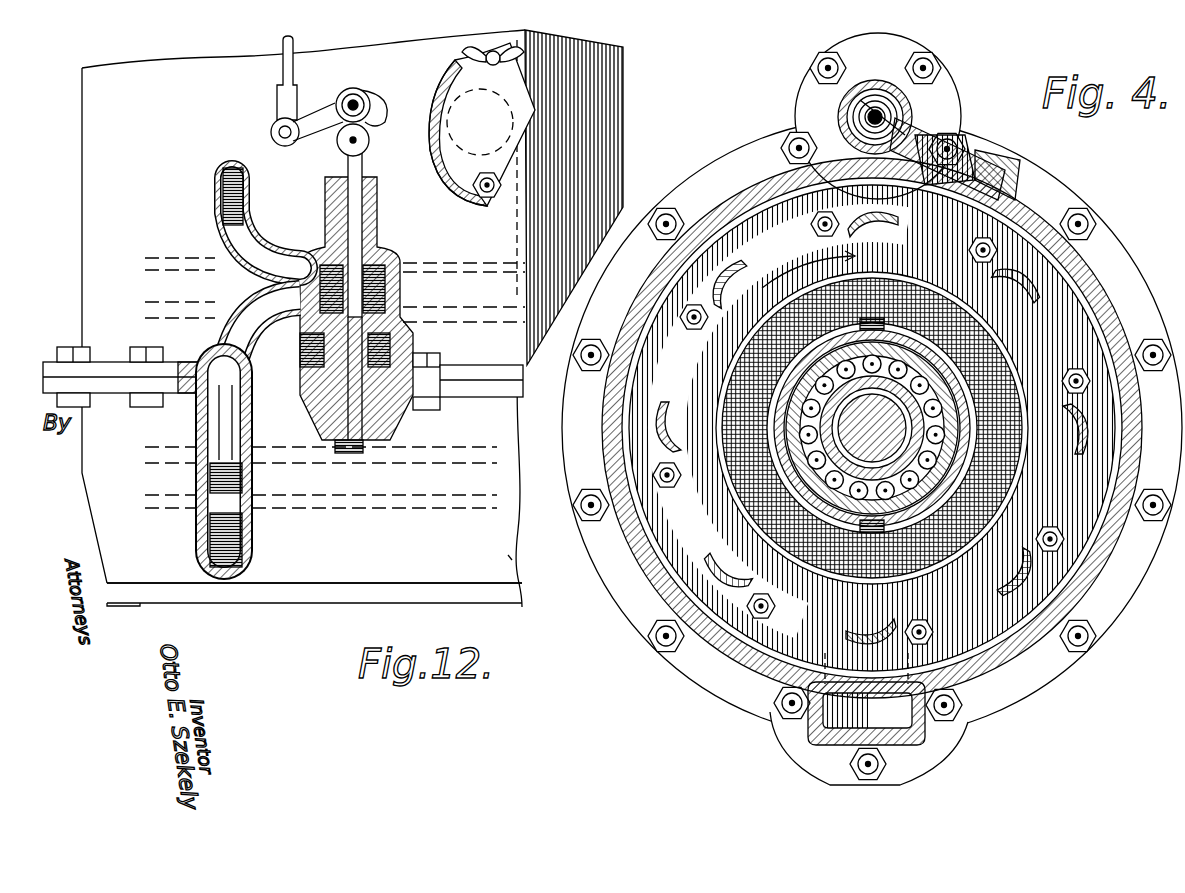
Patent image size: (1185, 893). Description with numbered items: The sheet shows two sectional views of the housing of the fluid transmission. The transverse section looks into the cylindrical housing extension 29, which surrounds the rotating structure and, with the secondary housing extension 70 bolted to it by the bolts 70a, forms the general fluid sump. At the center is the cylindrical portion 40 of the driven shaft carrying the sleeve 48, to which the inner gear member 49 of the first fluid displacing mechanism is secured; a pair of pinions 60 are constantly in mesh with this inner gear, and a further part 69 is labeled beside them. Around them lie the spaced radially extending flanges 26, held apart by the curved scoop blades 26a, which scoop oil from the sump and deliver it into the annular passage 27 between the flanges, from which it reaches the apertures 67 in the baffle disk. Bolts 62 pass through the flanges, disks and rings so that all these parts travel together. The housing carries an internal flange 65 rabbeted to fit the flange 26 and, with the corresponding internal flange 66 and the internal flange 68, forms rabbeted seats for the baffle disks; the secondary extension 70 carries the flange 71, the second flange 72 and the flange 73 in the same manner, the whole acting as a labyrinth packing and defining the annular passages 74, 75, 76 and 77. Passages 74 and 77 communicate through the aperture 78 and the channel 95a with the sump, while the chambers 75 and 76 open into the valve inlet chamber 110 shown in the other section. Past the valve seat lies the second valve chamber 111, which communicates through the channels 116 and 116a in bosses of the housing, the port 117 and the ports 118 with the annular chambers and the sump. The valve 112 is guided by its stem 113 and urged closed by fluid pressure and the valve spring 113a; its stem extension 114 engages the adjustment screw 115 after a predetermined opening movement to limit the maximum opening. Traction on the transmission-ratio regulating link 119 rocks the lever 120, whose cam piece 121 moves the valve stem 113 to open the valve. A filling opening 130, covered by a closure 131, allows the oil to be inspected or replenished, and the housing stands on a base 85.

In FIG. 12, the radially extending flanges 26 is at (428, 263).
In FIG. 4, the radially extending flanges 26 is at (1040, 318).
In FIG. 4, the scoop blades 26a is at (742, 272).
In FIG. 4, the annular passage 27 is at (810, 606).
In FIG. 12, the cylindrical housing extension 29 is at (622, 126).
In FIG. 4, the cylindrical housing extension 29 is at (1120, 558).
In FIG. 4, the cylindrical portion of the driven shaft 40 is at (960, 392).
In FIG. 4, the sleeve 48 is at (912, 420).
In FIG. 4, the inner gear member 49 is at (932, 330).
In FIG. 4, the pinions 60 is at (870, 535).
In FIG. 4, the bolts 62 is at (813, 228).
In FIG. 12, the internal flange 65 is at (478, 265).
In FIG. 12, the internal flange 66 is at (495, 318).
In FIG. 4, the internal flange 66 is at (748, 652).
In FIG. 4, the apertures 67 is at (885, 330).
In FIG. 12, the internal flange 68 is at (520, 367).
In FIG. 4, the key 69 is at (868, 316).
In FIG. 12, the secondary housing extension 70 is at (508, 555).
In FIG. 12, the bolts 70a is at (83, 347).
In FIG. 4, the bolts 70a is at (1152, 350).
In FIG. 12, the flange 71 is at (520, 392).
In FIG. 12, the second flange 72 is at (488, 452).
In FIG. 12, the flange 73 is at (492, 510).
In FIG. 12, the annular passage 74 is at (335, 295).
In FIG. 4, the annular passage 74 is at (1030, 655).
In FIG. 12, the annular passage 75 is at (452, 347).
In FIG. 12, the annular passage 76 is at (447, 415).
In FIG. 12, the annular passage 77 is at (440, 478).
In FIG. 4, the aperture 78 is at (866, 668).
In FIG. 12, the base plate 85 is at (257, 600).
In FIG. 4, the channel 95a is at (900, 718).
In FIG. 12, the valve inlet chamber 110 is at (297, 403).
In FIG. 12, the second valve chamber 111 is at (395, 292).
In FIG. 4, the second valve chamber 111 is at (848, 103).
In FIG. 4, the valve 112 is at (855, 118).
In FIG. 12, the valve stem 113 is at (362, 165).
In FIG. 4, the valve stem 113 is at (905, 108).
In FIG. 12, the valve spring 113a is at (395, 346).
In FIG. 12, the stem extension 114 is at (385, 405).
In FIG. 12, the adjustment screw 115 is at (352, 453).
In FIG. 12, the channel 116 is at (224, 243).
In FIG. 12, the channel 116a is at (238, 320).
In FIG. 12, the port 117 is at (282, 270).
In FIG. 4, the port 117 is at (938, 186).
In FIG. 12, the ports 118 is at (247, 184).
In FIG. 12, the transmission-ratio regulating link 119 is at (280, 76).
In FIG. 12, the lever 120 is at (322, 113).
In FIG. 12, the cam piece 121 is at (384, 108).
In FIG. 12, the filling opening 130 is at (370, 141).
In FIG. 12, the closure 131 is at (472, 187).